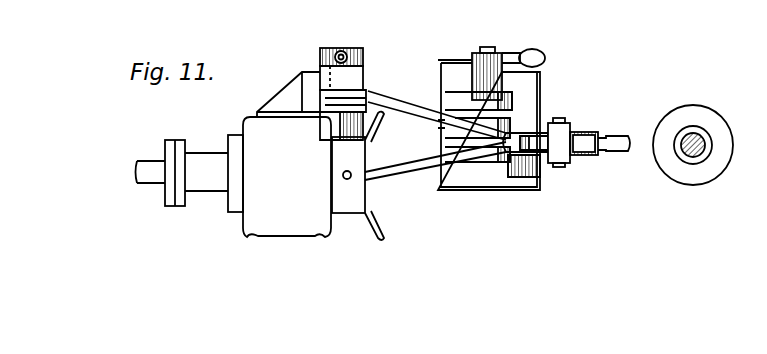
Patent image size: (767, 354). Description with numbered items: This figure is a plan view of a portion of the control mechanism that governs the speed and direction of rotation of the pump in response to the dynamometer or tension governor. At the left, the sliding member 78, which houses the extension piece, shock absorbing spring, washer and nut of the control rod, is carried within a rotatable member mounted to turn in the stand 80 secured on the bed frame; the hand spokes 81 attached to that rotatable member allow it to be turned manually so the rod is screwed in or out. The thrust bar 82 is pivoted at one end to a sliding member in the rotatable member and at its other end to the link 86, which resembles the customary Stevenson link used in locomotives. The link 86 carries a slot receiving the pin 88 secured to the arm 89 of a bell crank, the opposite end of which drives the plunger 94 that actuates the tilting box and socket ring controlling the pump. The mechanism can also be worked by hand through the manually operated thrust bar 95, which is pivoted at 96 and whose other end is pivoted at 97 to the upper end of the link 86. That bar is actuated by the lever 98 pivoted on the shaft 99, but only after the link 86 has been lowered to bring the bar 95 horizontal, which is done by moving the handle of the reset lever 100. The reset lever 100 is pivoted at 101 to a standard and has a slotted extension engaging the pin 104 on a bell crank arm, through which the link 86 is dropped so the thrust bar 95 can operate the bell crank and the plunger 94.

The sliding member 78 is at (193, 157).
The stand 80 is at (275, 218).
The hand spokes 81 is at (380, 124).
The thrust bar 82 is at (408, 180).
The link 86 is at (577, 134).
The pin 88 is at (582, 156).
The arm of bell crank 89 is at (596, 151).
The plunger 94 is at (701, 138).
The manually operated thrust bar 95 is at (433, 107).
The pivot 96 is at (348, 88).
The pivot 97 is at (552, 124).
The lever 98 is at (343, 50).
The shaft 99 is at (332, 46).
The reset lever 100 is at (546, 58).
The pivot 101 is at (510, 38).
The pin 104 is at (460, 90).